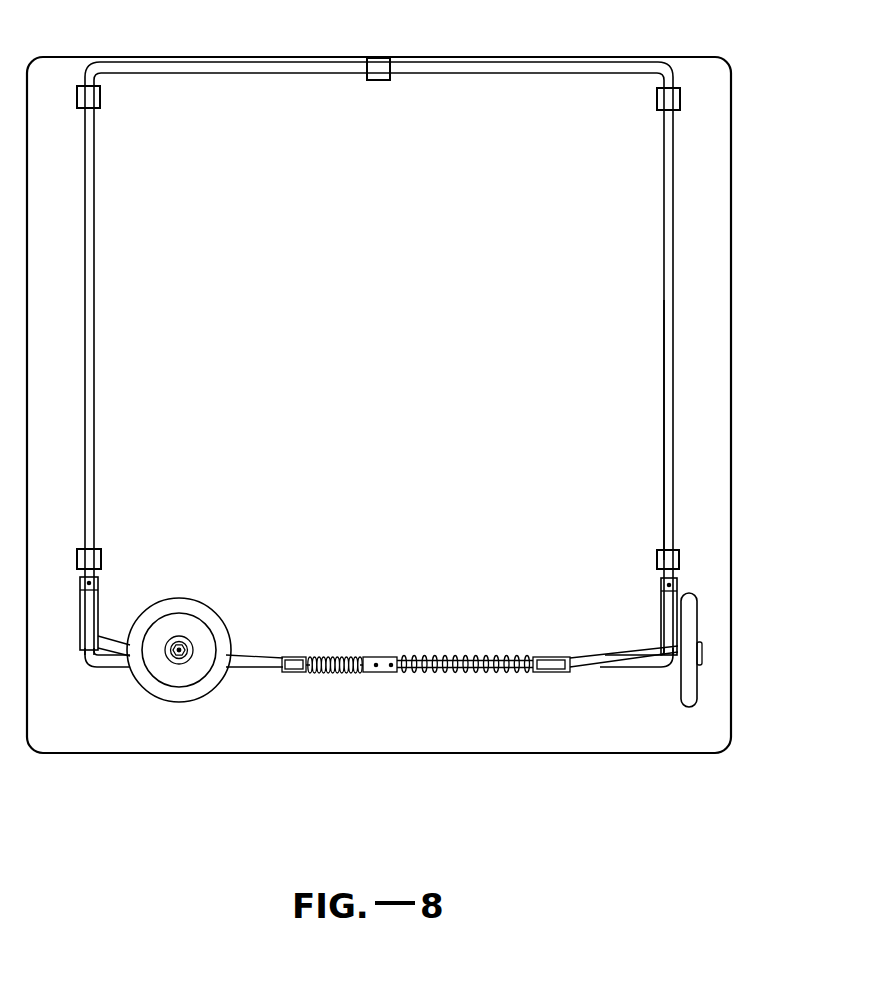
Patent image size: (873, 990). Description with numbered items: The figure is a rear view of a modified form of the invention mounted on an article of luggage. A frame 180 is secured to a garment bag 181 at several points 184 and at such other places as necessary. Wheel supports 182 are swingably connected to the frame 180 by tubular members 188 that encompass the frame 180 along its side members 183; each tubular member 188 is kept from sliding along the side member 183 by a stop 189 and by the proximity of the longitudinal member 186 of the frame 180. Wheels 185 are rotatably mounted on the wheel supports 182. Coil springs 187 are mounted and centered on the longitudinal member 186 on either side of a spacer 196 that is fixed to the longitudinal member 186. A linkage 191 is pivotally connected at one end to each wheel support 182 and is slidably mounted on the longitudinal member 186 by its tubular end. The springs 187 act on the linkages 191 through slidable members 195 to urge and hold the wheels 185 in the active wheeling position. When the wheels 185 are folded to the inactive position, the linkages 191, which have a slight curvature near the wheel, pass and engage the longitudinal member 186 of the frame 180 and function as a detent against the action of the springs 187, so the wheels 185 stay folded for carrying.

The frame 180 is at (682, 380).
The garment bag 181 is at (503, 85).
The wheel support 182 is at (112, 638).
The side member 183 is at (668, 482).
The point 184 is at (100, 93).
The wheel 185 is at (221, 606).
The longitudinal member 186 is at (240, 670).
The coil spring 187 is at (338, 675).
The tubular member 188 is at (85, 618).
The stop 189 is at (97, 581).
The linkage 191 is at (238, 652).
The slidable member 195 is at (294, 657).
The spacer 196 is at (384, 656).